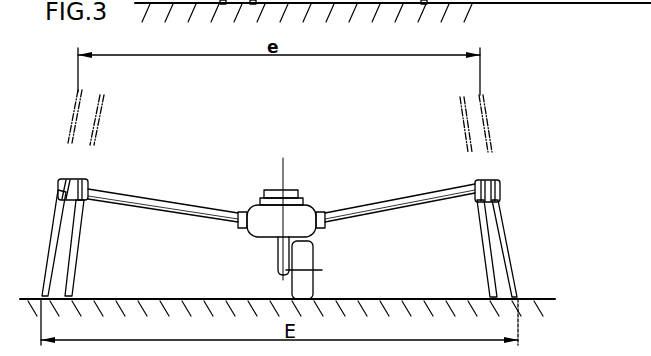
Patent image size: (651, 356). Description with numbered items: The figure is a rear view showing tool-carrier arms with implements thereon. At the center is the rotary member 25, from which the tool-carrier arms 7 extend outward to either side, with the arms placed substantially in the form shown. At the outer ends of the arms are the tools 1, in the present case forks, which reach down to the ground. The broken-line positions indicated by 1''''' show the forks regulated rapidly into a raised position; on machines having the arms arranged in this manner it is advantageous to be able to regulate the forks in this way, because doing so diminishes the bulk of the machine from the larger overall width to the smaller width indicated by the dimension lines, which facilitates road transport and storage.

The tool 1 is at (521, 248).
The fork in regulated position 1''''' is at (524, 120).
The tool-carrier arm 7 is at (452, 193).
The rotary member 25 is at (283, 148).